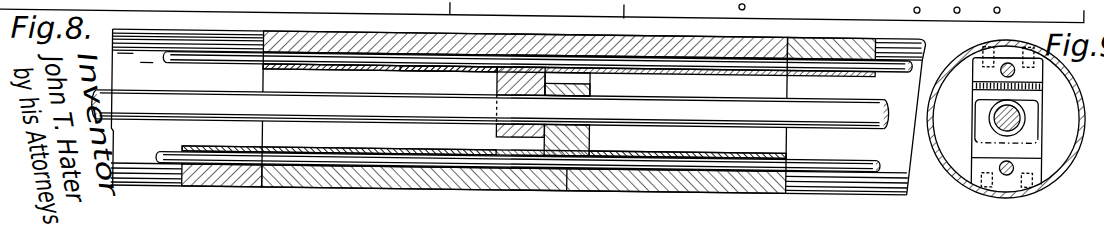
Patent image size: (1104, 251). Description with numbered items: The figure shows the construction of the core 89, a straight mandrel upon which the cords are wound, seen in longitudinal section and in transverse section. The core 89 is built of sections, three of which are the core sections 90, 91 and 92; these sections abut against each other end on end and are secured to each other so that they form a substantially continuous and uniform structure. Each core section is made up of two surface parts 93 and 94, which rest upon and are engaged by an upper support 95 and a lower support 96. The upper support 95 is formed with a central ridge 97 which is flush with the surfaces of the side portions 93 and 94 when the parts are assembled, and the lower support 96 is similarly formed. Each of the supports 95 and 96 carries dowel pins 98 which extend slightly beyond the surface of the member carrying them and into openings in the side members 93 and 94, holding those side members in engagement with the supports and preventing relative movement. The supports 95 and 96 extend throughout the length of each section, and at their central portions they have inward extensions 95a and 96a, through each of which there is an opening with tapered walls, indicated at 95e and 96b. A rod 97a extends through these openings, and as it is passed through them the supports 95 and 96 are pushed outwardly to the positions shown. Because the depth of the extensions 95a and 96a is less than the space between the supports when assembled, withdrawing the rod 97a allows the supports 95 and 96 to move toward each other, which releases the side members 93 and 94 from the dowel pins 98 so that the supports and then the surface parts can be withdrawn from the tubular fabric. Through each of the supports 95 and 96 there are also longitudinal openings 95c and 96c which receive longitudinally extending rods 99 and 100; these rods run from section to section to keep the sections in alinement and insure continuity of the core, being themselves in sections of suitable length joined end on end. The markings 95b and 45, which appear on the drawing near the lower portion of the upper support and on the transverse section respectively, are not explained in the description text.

In FIG. 9, the knurled band 45 is at (1021, 95).
In FIG. 8, the core 89 is at (539, 186).
In FIG. 8, the core section 90 is at (233, 32).
In FIG. 8, the core section 91 is at (576, 31).
In FIG. 8, the core section 92 is at (843, 33).
In FIG. 9, the surface part 93 is at (955, 68).
In FIG. 9, the surface part 94 is at (1023, 121).
In FIG. 8, the upper support 95 is at (441, 68).
In FIG. 9, the upper support 95 is at (1044, 68).
In FIG. 8, the inward extension 95a is at (498, 70).
In FIG. 8, the tube collar 95b is at (494, 135).
In FIG. 8, the longitudinal opening 95c is at (378, 49).
In FIG. 8, the tapered opening 95e is at (541, 91).
In FIG. 8, the lower support 96 is at (663, 146).
In FIG. 9, the lower support 96 is at (1042, 187).
In FIG. 8, the inward extension 96a is at (593, 136).
In FIG. 9, the inward extension 96a is at (1034, 132).
In FIG. 8, the tapered opening 96b is at (593, 87).
In FIG. 9, the tapered opening 96b is at (979, 98).
In FIG. 8, the longitudinal opening 96c is at (351, 154).
In FIG. 8, the central ridge 97 is at (488, 109).
In FIG. 9, the central ridge 97 is at (1022, 50).
In FIG. 8, the rod 97a is at (839, 92).
In FIG. 9, the rod 97a is at (994, 117).
In FIG. 8, the dowel pin 98 is at (523, 43).
In FIG. 9, the dowel pin 98 is at (987, 55).
In FIG. 8, the longitudinal rod 99 is at (231, 60).
In FIG. 9, the longitudinal rod 99 is at (1000, 71).
In FIG. 8, the longitudinal rod 100 is at (838, 147).
In FIG. 9, the longitudinal rod 100 is at (1007, 161).